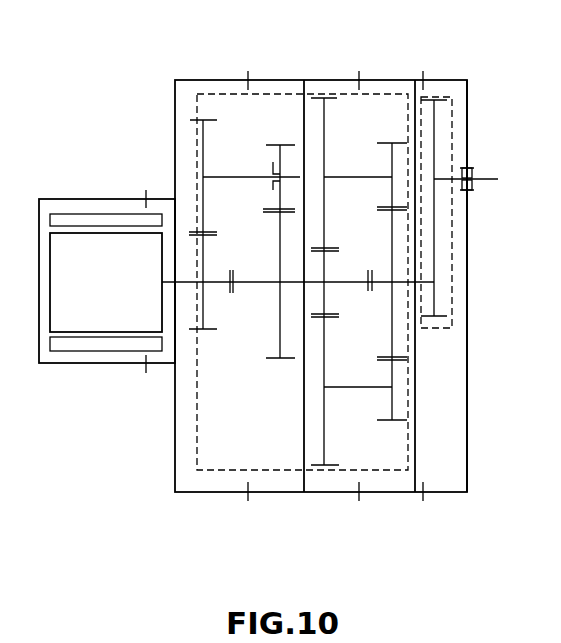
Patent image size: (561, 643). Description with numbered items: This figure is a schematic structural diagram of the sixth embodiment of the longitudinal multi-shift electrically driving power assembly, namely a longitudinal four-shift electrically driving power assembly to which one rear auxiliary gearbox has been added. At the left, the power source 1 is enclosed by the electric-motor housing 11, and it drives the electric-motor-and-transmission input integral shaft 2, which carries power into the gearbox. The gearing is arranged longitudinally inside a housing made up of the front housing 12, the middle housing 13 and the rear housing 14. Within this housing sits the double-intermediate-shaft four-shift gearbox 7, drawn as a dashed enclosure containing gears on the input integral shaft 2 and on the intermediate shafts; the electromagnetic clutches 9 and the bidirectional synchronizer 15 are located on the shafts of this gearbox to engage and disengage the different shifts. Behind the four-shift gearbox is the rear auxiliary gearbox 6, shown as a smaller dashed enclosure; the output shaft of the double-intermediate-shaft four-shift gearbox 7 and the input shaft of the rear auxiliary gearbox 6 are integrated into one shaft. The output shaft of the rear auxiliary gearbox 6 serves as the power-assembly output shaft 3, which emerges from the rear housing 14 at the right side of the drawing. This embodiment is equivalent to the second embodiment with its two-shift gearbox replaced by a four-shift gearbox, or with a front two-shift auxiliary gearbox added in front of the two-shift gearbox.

The power source 1 is at (140, 252).
The electric-motor-and-transmission input integral shaft 2 is at (192, 282).
The power-assembly output shaft 3 is at (498, 179).
The rear auxiliary gearbox 6 is at (438, 98).
The double-intermediate-shaft four-shift gearbox 7 is at (290, 93).
The electromagnetic clutches 9 is at (272, 172).
The electric-motor housing 11 is at (103, 363).
The front housing 12 is at (178, 492).
The middle housing 13 is at (270, 492).
The rear housing 14 is at (433, 492).
The bidirectional synchronizer 15 is at (372, 293).